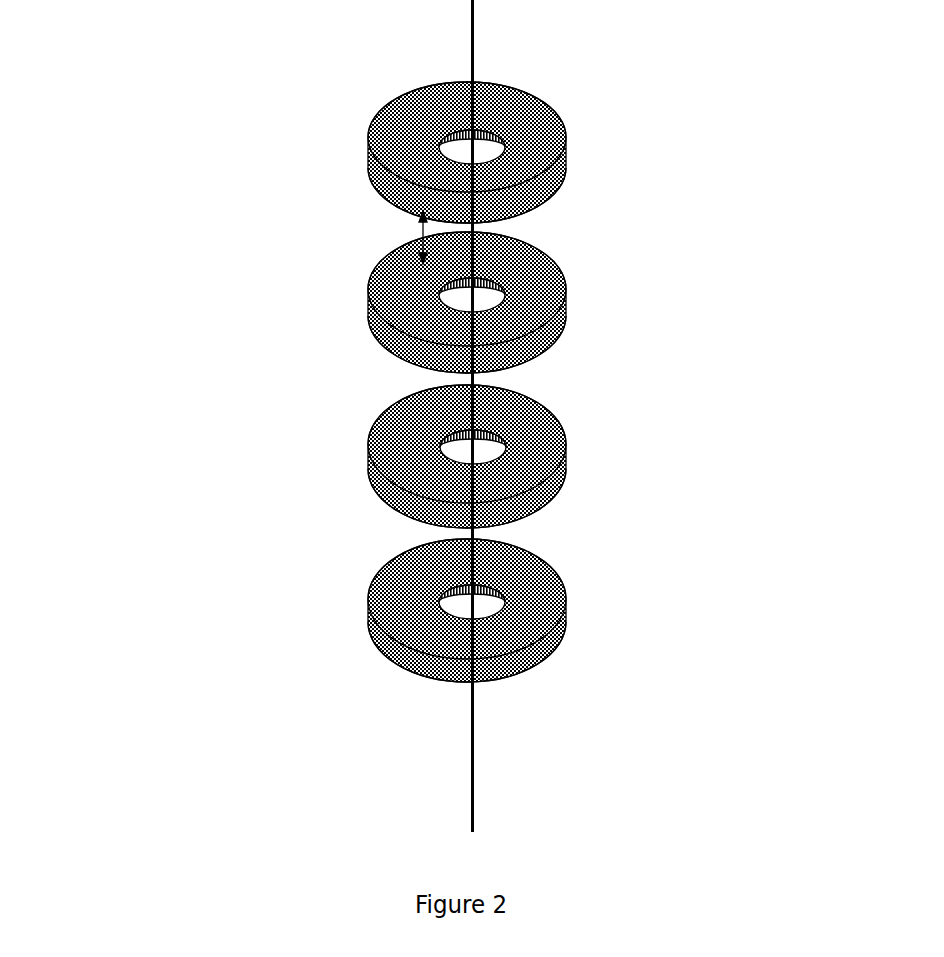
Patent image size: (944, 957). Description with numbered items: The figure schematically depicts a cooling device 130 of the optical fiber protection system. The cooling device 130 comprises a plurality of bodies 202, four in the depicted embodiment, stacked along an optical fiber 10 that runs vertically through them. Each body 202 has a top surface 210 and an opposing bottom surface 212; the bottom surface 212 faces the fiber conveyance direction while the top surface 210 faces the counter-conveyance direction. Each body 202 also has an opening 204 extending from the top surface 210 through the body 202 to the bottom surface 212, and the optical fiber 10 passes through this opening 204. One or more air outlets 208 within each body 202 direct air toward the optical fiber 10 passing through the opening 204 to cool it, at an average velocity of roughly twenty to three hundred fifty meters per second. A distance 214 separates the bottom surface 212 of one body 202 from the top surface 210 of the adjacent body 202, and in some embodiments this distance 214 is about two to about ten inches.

The cooling device 130 is at (333, 52).
The optical fiber 10 is at (475, 50).
The body 202 is at (355, 139).
The opening 204 is at (438, 155).
The air outlet 208 is at (438, 135).
The top surface 210 is at (537, 138).
The bottom surface 212 is at (558, 202).
The distance 214 is at (423, 236).